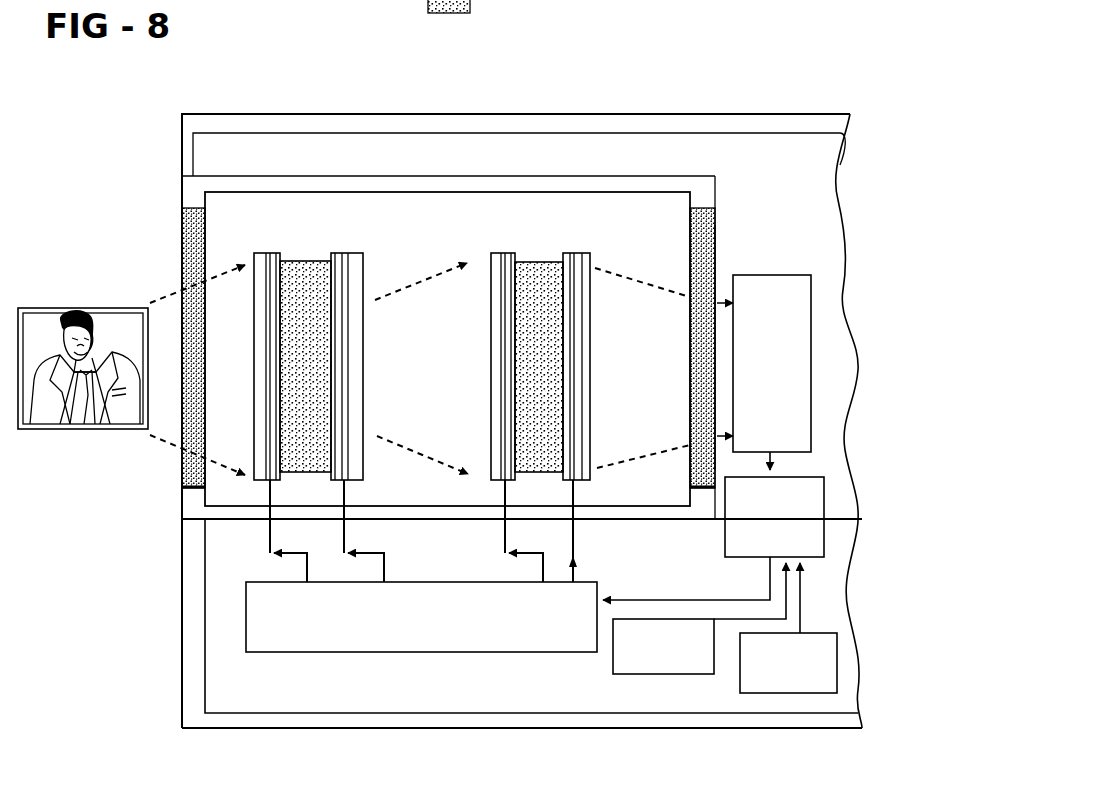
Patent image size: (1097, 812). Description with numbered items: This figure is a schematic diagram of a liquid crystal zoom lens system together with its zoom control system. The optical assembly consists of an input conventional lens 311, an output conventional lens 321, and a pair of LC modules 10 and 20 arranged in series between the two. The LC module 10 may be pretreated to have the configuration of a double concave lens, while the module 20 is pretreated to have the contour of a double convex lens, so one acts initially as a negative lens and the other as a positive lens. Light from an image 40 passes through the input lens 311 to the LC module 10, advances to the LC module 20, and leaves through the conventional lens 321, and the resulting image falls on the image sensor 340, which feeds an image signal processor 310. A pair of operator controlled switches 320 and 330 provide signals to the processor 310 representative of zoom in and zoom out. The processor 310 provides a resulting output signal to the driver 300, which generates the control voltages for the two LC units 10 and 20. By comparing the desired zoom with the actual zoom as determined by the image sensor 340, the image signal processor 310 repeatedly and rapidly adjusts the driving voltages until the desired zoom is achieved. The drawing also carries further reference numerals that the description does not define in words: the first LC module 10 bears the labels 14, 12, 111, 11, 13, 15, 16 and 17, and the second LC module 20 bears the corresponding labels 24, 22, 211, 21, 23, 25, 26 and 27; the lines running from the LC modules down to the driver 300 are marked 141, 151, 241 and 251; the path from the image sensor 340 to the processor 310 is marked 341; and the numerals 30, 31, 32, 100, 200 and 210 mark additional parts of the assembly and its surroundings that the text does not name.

The LC module 10 is at (347, 374).
The first alignment layer 11 is at (328, 253).
The first liquid crystal layer 111 is at (296, 262).
The first electrode 12 is at (276, 253).
The second electrode 13 is at (342, 253).
The first substrate 14 is at (268, 253).
The second substrate 15 is at (355, 253).
The first polarizer 16 is at (262, 373).
The second polarizer 17 is at (363, 348).
The LC module 20 is at (519, 313).
The alignment layer of second lens 21 is at (540, 262).
The second liquid crystal layer 211 is at (532, 262).
The electrode of second lens 22 is at (511, 253).
The electrode of second lens 23 is at (574, 253).
The substrate of second lens 24 is at (497, 253).
The substrate of second lens 25 is at (580, 254).
The polarizer of second lens 26 is at (497, 373).
The polarizer of second lens 27 is at (590, 373).
The lens barrel 30 is at (635, 520).
The front lens 31 is at (200, 207).
The input conventional lens 311 is at (182, 238).
The rear lens 32 is at (713, 195).
The output conventional lens 321 is at (718, 225).
The image 40 is at (76, 430).
The camera module 100 is at (232, 553).
The first electrode lead 141 is at (270, 552).
The second electrode lead 151 is at (346, 525).
The electronic device housing 200 is at (863, 279).
The circuit board 210 is at (205, 713).
The third electrode lead 241 is at (503, 530).
The fourth electrode lead 251 is at (575, 535).
The driver 300 is at (246, 611).
The image signal processor 310 is at (743, 558).
The operator controlled switch 320 is at (664, 675).
The operator controlled switch 330 is at (798, 694).
The image sensor 340 is at (787, 275).
The image signal line 341 is at (777, 463).